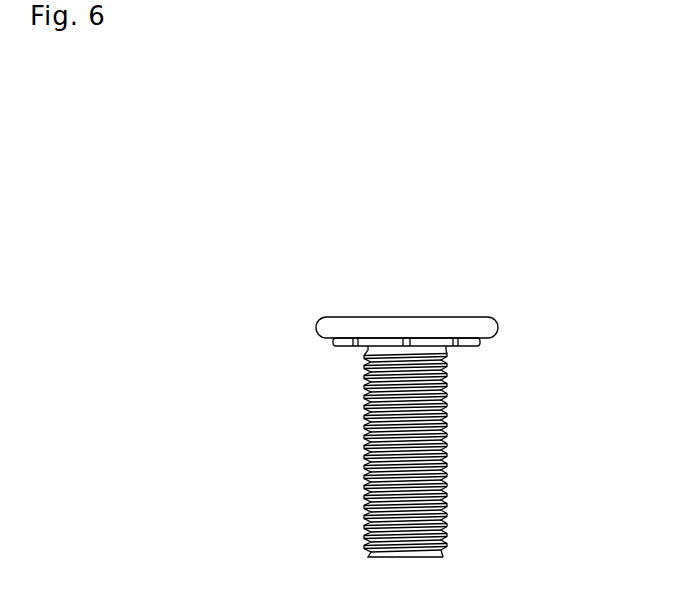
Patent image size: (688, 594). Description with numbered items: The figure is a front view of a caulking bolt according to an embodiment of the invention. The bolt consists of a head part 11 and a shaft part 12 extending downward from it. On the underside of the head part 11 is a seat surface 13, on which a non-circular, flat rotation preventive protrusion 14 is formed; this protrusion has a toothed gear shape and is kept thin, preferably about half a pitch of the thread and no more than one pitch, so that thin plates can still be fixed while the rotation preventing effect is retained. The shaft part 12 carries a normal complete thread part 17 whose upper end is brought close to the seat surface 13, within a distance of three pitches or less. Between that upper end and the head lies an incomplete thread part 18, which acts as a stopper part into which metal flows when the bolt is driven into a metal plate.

The head part 11 is at (432, 317).
The shaft part 12 is at (375, 440).
The seat surface 13 is at (327, 340).
The rotation preventive protrusion 14 is at (480, 342).
The normal complete thread part 17 is at (447, 462).
The incomplete thread part 18 is at (363, 358).